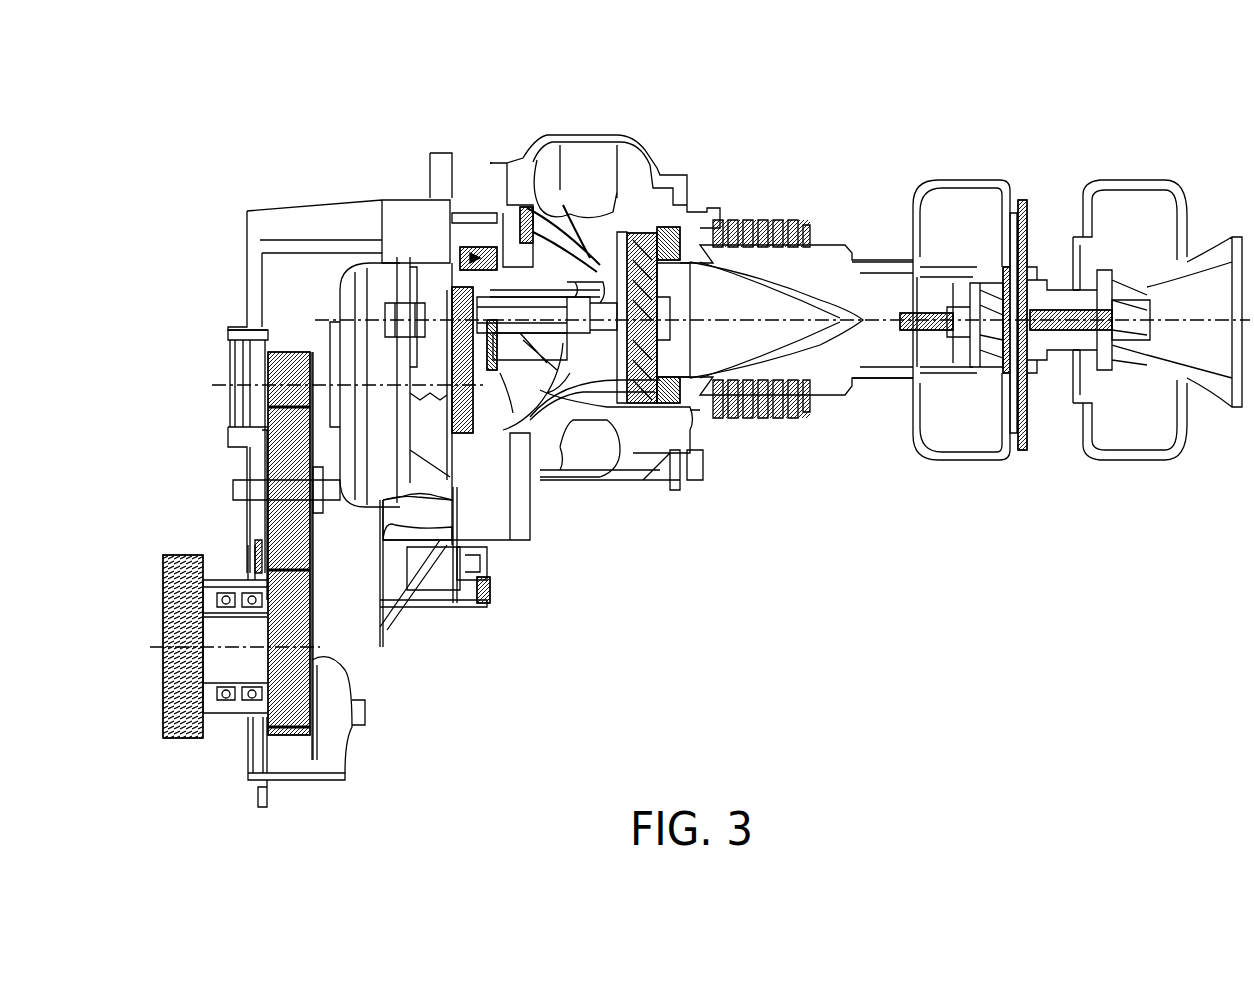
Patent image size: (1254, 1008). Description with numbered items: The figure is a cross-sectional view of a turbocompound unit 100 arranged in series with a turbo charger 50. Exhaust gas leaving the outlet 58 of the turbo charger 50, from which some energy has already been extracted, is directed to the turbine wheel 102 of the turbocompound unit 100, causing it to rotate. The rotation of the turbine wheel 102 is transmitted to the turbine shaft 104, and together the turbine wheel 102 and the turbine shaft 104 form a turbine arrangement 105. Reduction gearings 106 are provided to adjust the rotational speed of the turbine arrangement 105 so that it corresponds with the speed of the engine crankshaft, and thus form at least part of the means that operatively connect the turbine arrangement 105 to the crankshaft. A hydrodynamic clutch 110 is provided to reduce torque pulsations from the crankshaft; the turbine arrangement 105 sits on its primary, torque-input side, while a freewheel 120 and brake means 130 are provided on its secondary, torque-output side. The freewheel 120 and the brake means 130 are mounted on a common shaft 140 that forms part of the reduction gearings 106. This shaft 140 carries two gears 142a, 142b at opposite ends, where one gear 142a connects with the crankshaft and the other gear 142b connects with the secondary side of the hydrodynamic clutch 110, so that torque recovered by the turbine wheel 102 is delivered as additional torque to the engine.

The turbo charger 50 is at (1048, 483).
The outlet 58 is at (890, 355).
The turbocompound unit 100 is at (733, 173).
The turbine wheel 102 is at (665, 355).
The turbine shaft 104 is at (557, 393).
The turbine arrangement 105 is at (600, 270).
The reduction gearings 106 is at (430, 283).
The hydrodynamic clutch 110 is at (375, 362).
The freewheel 120 is at (176, 656).
The brake means 130 is at (338, 624).
The common shaft 140 is at (240, 667).
The gear 142a is at (180, 555).
The gear 142b is at (352, 640).